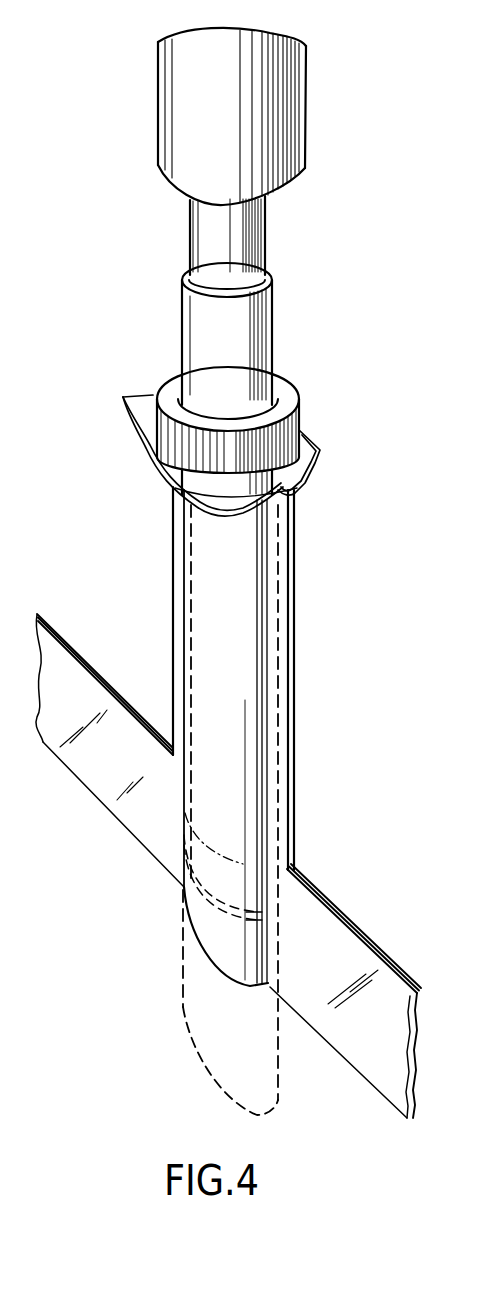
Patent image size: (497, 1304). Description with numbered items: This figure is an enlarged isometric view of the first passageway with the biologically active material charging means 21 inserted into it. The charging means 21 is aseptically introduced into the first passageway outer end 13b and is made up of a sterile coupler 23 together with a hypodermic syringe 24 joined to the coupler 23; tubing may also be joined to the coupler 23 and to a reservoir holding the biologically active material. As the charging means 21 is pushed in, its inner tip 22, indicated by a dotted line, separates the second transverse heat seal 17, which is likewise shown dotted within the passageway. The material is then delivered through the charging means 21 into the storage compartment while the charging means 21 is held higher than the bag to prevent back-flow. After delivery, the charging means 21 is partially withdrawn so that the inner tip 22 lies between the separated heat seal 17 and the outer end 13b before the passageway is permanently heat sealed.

The biologically active material charging means 21 is at (303, 130).
The hypodermic syringe 24 is at (258, 241).
The sterile coupler 23 is at (268, 318).
The first passageway outer end 13b is at (233, 576).
The second transverse heat seal 17 is at (230, 898).
The inner tip 22 is at (240, 1108).